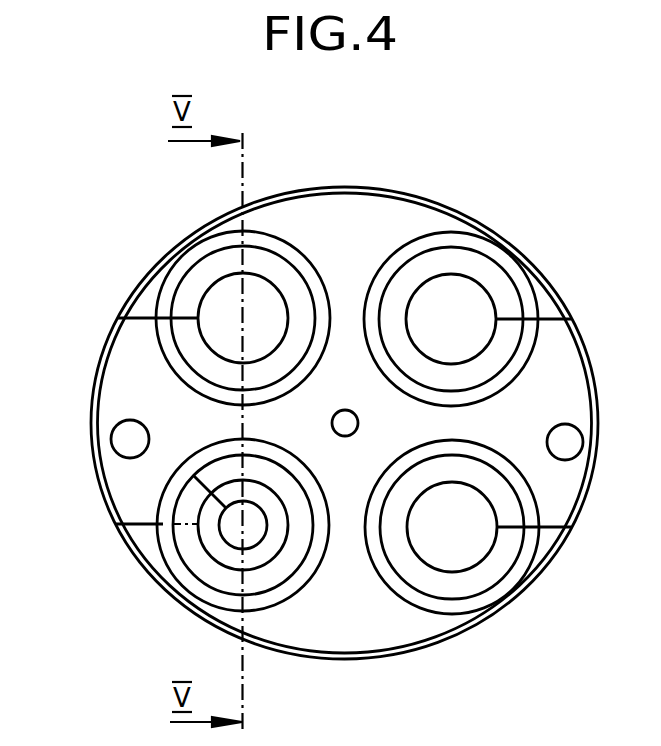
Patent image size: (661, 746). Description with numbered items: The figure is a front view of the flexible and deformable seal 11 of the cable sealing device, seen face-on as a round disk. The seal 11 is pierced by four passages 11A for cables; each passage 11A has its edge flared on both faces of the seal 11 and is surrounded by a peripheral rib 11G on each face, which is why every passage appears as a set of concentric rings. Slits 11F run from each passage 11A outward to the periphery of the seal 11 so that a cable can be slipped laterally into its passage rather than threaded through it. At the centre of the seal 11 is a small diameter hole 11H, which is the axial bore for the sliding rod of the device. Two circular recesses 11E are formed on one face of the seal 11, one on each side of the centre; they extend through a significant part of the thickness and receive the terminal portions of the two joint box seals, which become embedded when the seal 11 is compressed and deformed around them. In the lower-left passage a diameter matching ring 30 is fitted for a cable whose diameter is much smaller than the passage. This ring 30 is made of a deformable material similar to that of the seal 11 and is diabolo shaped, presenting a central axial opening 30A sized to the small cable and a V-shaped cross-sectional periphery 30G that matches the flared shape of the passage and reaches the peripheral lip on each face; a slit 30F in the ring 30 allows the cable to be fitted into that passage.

The seal 11 is at (349, 170).
The passages 11A is at (225, 285).
The peripheral rib 11G is at (305, 263).
The circular recesses 11E is at (124, 438).
The small diameter hole 11H is at (343, 422).
The slits 11F is at (137, 527).
The diameter matching ring 30 is at (287, 606).
The axial opening 30A is at (262, 510).
The slit 30F is at (205, 485).
The V-shaped cross-sectional periphery 30G is at (208, 572).